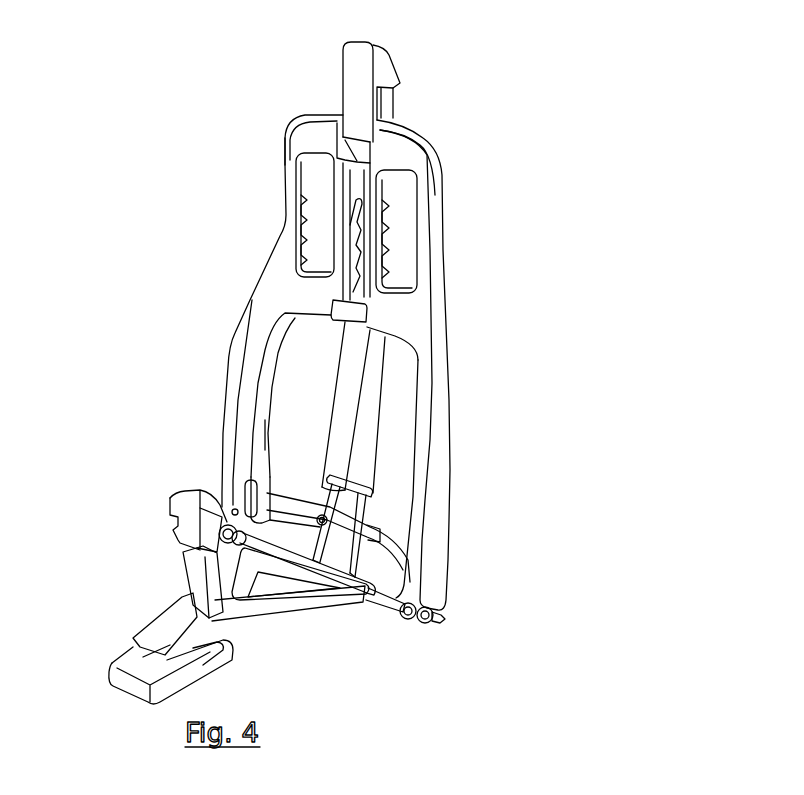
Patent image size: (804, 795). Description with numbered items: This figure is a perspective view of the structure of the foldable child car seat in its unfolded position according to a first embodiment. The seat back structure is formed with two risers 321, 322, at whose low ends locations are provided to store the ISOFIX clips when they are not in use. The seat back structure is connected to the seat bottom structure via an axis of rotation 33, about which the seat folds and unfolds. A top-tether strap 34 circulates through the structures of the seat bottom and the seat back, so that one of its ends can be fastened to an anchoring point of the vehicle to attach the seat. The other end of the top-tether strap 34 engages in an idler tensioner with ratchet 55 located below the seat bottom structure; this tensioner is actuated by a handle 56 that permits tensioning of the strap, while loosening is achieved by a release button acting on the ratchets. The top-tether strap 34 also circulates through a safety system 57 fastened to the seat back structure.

The top-tether strap 34 is at (395, 49).
The riser of the seat back structure 321 is at (230, 313).
The riser of the seat back structure 322 is at (460, 369).
The safety system 57 is at (385, 504).
The axis of rotation 33 is at (327, 572).
The idler tensioner with ratchet 55 is at (213, 681).
The handle 56 is at (110, 677).